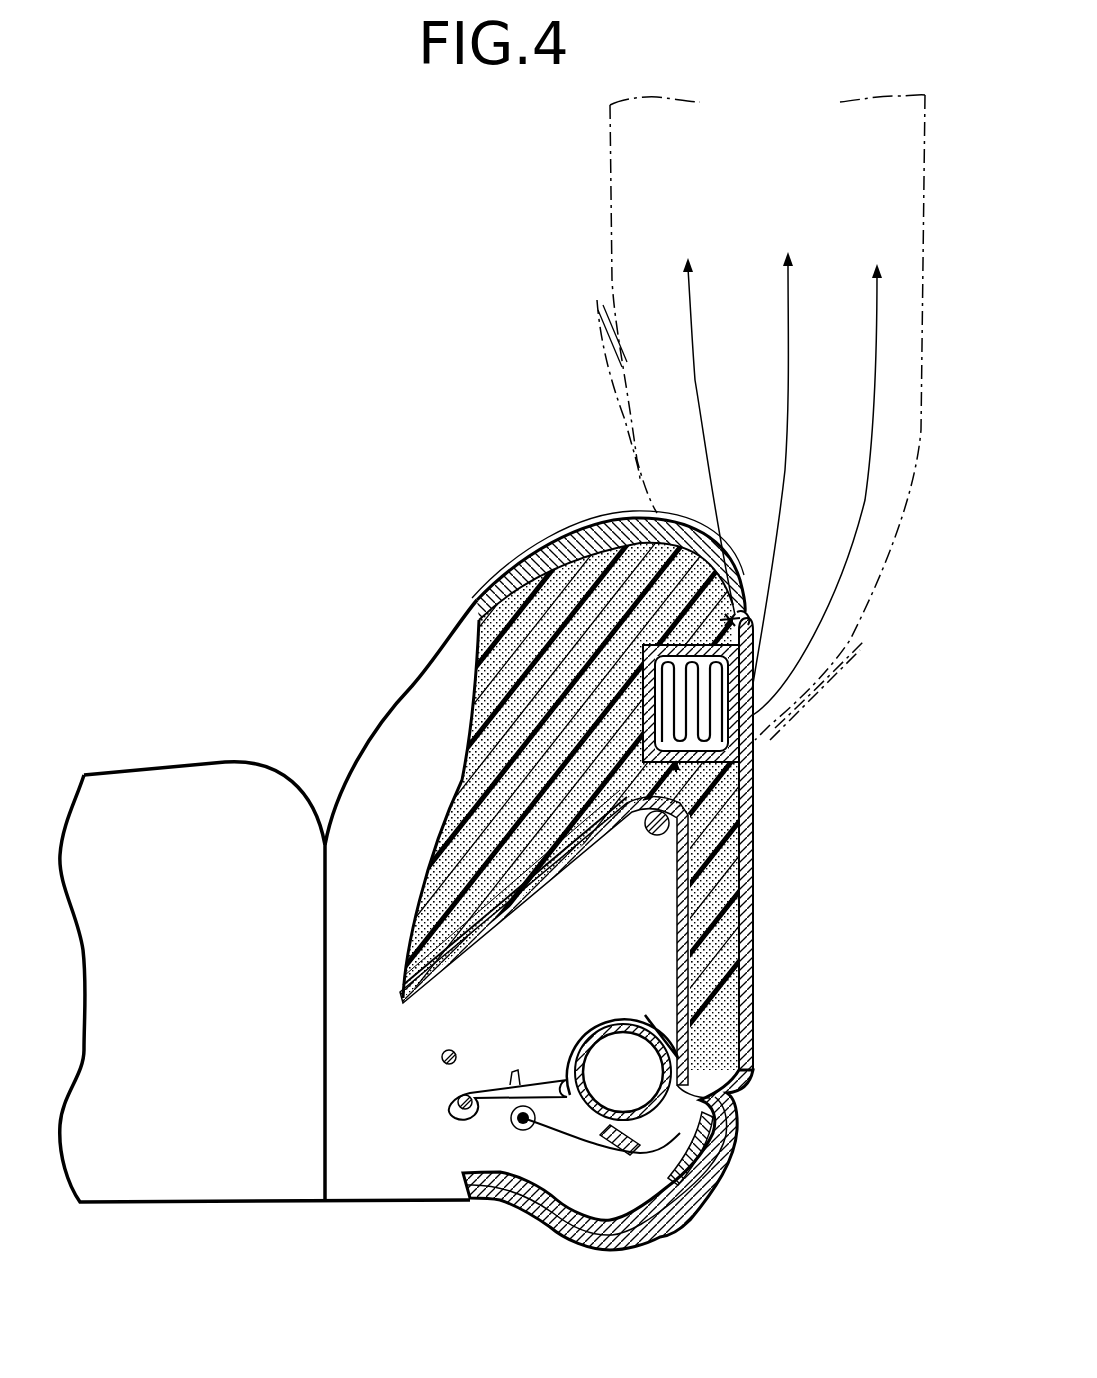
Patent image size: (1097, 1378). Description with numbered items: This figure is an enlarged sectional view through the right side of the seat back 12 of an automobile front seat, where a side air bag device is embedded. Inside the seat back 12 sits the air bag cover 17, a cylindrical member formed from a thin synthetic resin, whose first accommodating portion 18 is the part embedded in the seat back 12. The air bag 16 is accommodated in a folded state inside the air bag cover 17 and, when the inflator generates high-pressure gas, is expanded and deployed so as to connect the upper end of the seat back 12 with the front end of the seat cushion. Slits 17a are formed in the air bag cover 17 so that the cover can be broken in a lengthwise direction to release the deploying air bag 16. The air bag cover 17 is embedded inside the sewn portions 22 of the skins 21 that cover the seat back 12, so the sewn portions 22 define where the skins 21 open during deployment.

The seat back 12 is at (236, 774).
The air bag 16 is at (606, 158).
The air bag cover 17 is at (628, 708).
The slits 17a is at (700, 640).
The first accommodating portion 18 is at (667, 838).
The skins 21 is at (656, 515).
The sewn portions 22 is at (737, 622).